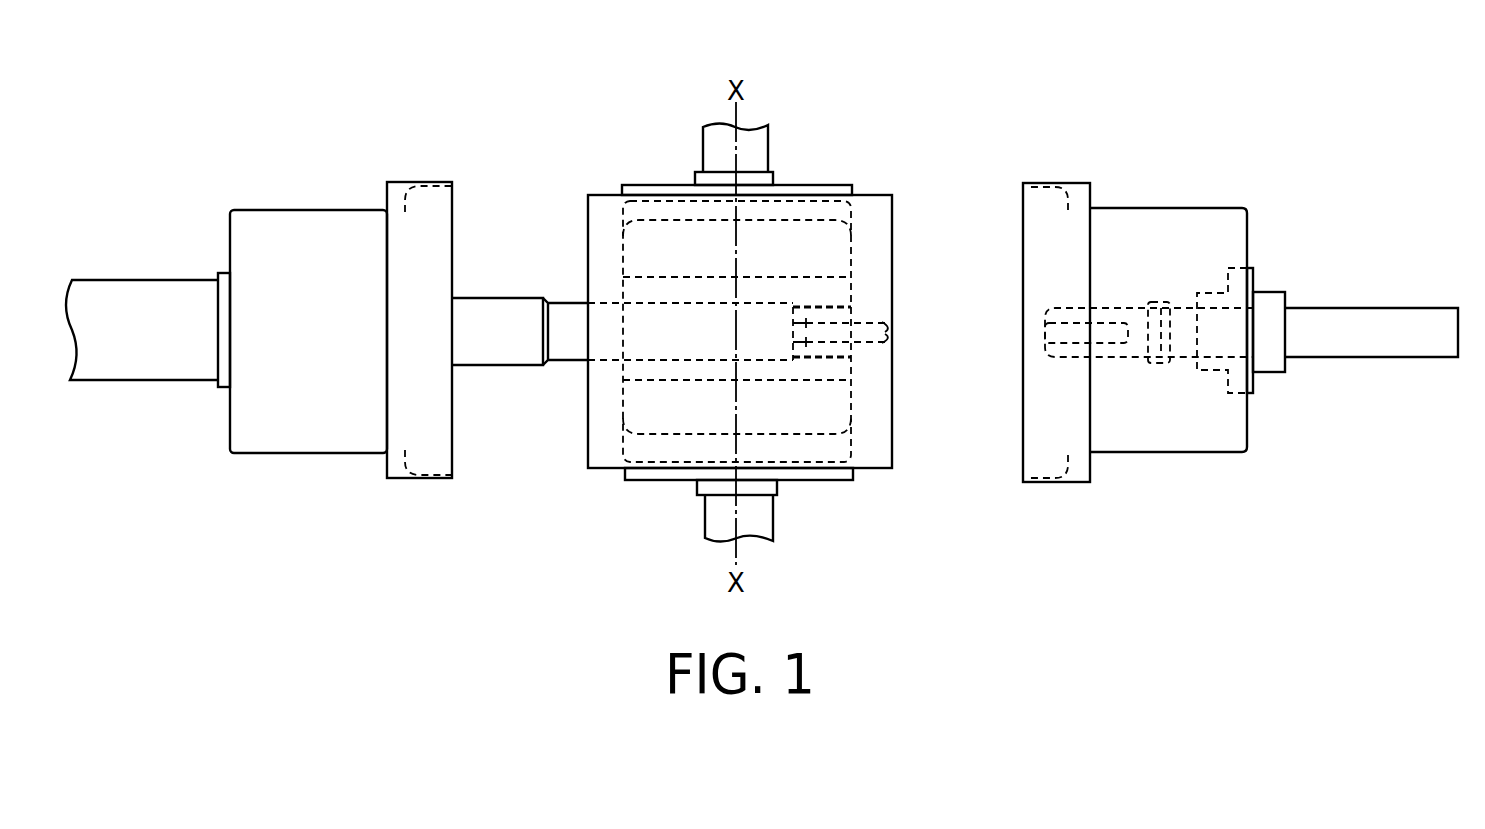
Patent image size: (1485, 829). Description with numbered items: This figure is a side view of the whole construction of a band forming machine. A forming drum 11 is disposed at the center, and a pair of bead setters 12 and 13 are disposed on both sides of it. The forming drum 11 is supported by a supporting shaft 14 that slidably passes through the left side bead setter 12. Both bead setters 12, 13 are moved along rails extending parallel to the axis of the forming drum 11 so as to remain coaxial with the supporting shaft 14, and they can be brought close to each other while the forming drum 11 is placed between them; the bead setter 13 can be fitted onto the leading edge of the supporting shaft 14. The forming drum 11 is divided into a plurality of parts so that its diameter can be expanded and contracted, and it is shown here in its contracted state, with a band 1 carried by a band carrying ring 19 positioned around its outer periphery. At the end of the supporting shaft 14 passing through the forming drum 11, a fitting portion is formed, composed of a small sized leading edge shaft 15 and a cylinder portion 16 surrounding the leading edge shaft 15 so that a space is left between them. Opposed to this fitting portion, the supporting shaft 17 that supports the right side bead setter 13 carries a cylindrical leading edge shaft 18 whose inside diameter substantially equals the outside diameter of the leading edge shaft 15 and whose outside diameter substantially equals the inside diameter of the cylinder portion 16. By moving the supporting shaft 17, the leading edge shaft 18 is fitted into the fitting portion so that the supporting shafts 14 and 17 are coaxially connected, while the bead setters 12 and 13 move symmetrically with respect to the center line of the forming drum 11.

The band 1 is at (892, 250).
The forming drum 11 is at (623, 253).
The bead setter 12 is at (343, 158).
The bead setter 13 is at (1157, 138).
The supporting shaft 14 is at (568, 362).
The leading edge shaft 15 is at (892, 348).
The cylinder portion 16 is at (864, 310).
The supporting shaft 17 is at (1387, 357).
The leading edge shaft 18 is at (1062, 355).
The band carrying ring 19 is at (795, 185).